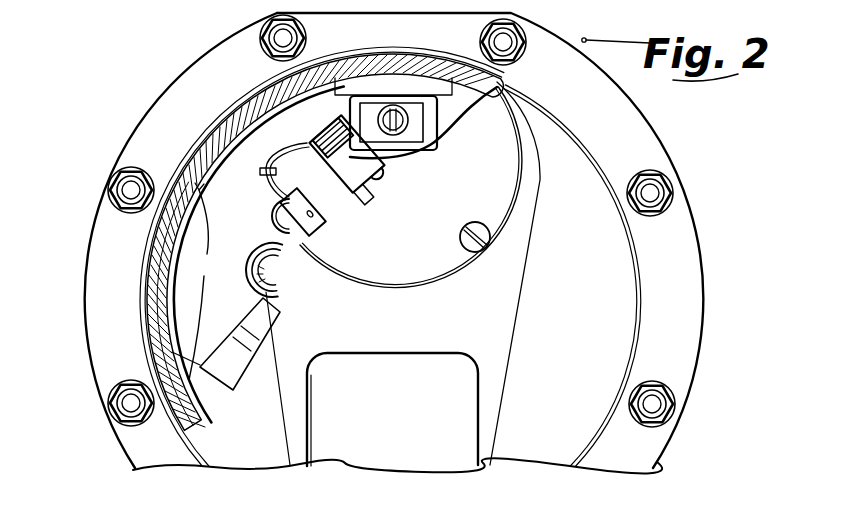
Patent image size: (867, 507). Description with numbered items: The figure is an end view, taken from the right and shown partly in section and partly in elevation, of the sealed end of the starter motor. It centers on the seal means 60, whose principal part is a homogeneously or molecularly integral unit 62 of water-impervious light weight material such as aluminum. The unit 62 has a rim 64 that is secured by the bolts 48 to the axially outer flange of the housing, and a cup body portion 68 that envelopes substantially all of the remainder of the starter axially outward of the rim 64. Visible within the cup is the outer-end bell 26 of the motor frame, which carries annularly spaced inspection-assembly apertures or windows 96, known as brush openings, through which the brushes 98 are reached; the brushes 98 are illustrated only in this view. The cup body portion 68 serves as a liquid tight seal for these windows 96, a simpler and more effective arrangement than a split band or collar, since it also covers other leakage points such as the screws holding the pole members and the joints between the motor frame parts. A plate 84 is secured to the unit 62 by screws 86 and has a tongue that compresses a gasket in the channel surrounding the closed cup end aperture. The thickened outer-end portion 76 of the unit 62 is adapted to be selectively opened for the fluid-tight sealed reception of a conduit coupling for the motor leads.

The outer-end bell 26 is at (228, 300).
The bolts 48 is at (650, 216).
The seal means 60 is at (112, 123).
The homogeneously integral unit 62 is at (222, 122).
The rim 64 is at (88, 223).
The cup body portion 68 is at (140, 301).
The thickened outer-end portion 76 is at (480, 387).
The plate 84 is at (433, 270).
The screws 86 is at (478, 230).
The inspection-assembly apertures or windows 96 is at (488, 92).
The brushes 98 is at (262, 199).